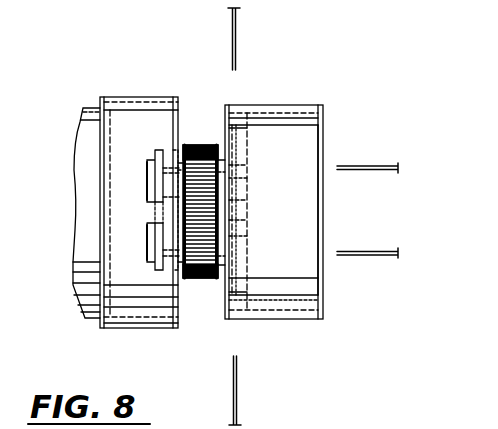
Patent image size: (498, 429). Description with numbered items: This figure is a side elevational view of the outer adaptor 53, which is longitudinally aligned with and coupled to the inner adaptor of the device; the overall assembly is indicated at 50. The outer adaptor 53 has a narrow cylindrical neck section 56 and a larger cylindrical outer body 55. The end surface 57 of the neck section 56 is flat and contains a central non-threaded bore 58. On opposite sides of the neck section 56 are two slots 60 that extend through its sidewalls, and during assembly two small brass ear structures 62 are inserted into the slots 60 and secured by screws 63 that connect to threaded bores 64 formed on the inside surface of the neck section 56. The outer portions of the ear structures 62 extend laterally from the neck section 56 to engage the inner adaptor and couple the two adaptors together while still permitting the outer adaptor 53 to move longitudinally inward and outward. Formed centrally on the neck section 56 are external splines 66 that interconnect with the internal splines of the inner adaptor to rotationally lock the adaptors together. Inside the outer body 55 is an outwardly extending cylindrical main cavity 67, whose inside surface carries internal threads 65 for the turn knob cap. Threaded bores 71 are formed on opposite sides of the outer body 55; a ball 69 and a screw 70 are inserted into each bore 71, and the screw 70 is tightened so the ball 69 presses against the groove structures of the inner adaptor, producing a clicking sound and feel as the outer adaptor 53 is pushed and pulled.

The drive assembly housing 50 is at (117, 94).
The outer adaptor 53 is at (338, 110).
The outer body 55 is at (297, 317).
The neck section 56 is at (175, 162).
The end surface 57 is at (150, 193).
The central non-threaded bore 58 is at (160, 213).
The slots 60 is at (160, 152).
The ear structures 62 is at (155, 175).
The screws 63 is at (360, 168).
The threaded bores 64 is at (234, 178).
The internal threads 65 is at (322, 182).
The external splines 66 is at (196, 280).
The main cavity 67 is at (283, 195).
The ball 69 is at (230, 88).
The screw 70 is at (236, 13).
The threaded bores 71 is at (238, 117).